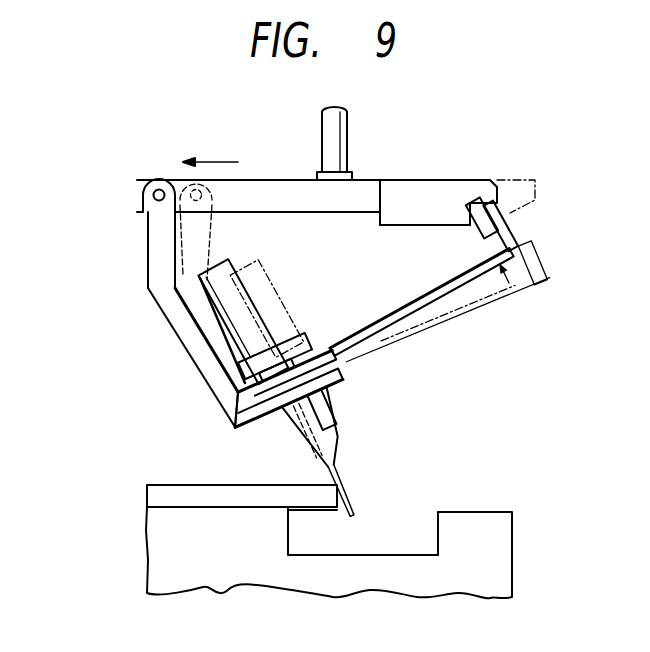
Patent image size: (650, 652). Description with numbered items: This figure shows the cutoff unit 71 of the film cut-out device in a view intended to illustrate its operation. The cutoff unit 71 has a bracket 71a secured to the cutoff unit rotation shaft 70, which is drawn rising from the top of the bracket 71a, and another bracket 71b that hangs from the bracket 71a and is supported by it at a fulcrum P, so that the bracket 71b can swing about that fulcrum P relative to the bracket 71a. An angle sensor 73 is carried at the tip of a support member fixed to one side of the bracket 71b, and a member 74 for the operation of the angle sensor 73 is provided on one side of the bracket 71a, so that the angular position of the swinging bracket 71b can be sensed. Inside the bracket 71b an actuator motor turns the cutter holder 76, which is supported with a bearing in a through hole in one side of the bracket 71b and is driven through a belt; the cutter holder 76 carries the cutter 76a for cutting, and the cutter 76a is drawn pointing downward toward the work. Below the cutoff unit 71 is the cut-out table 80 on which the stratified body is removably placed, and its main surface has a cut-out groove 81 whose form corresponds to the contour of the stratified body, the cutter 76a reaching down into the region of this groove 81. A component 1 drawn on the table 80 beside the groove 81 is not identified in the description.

The cutoff unit 71 is at (119, 222).
The bracket 71a is at (270, 187).
The bracket 71b is at (148, 284).
The fulcrum P is at (158, 188).
The cutoff unit rotation shaft 70 is at (345, 130).
The angle sensor 73 is at (473, 200).
The member for operation of the angle sensor 74 is at (400, 214).
The cutter holder 76 is at (245, 302).
The cutter 76a is at (340, 488).
The plate 1 is at (178, 493).
The cut-out table 80 is at (512, 548).
The cut-out groove 81 is at (430, 529).